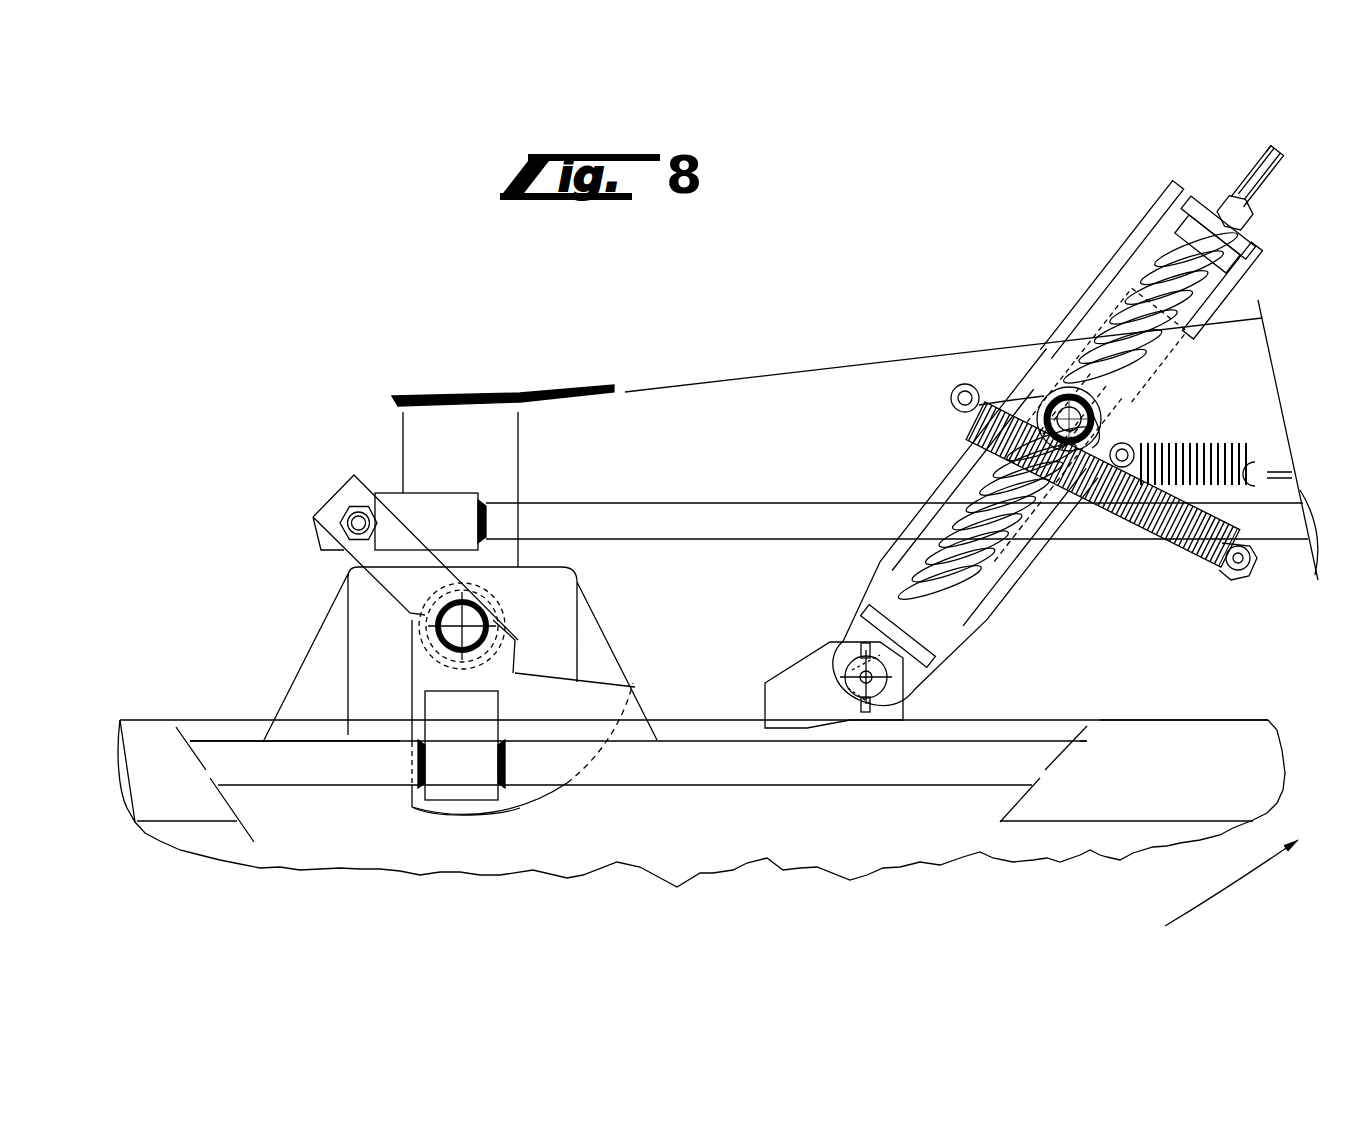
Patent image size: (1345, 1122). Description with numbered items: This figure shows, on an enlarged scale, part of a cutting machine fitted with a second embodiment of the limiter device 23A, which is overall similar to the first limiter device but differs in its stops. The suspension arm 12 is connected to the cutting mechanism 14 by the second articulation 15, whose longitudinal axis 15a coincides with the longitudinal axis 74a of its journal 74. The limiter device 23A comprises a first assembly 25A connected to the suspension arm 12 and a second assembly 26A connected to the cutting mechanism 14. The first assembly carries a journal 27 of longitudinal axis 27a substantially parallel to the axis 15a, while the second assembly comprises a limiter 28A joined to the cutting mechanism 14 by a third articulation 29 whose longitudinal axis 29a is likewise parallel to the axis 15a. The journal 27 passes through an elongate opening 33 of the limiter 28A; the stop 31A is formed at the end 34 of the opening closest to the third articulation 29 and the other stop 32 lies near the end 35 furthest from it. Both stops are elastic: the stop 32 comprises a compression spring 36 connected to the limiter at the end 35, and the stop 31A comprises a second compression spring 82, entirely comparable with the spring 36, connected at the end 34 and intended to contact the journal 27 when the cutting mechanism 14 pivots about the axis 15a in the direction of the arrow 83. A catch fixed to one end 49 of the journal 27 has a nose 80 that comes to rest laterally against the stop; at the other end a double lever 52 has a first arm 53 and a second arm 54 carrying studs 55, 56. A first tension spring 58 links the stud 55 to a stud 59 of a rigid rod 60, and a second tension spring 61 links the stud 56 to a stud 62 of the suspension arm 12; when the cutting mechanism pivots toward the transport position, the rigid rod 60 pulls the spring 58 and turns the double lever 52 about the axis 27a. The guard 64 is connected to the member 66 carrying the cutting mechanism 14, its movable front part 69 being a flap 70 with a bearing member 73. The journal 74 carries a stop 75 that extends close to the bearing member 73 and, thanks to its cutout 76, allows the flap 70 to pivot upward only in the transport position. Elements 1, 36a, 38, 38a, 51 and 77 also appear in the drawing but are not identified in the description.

The frame member 1 is at (757, 378).
The suspension arm 12 is at (627, 392).
The cutting mechanism 14 is at (1262, 740).
The second articulation 15 is at (410, 612).
The longitudinal axis of the second articulation 15a is at (423, 630).
The limiter device 23A is at (1278, 264).
The first assembly 25A is at (1047, 390).
The second assembly 26A is at (979, 644).
The journal 27 is at (1080, 388).
The longitudinal axis of the journal 27a is at (1182, 343).
The limiter 28A is at (870, 572).
The third articulation 29 is at (855, 660).
The longitudinal axis of the third articulation 29a is at (880, 690).
The stop 31A is at (1004, 478).
The stop 32 is at (1258, 347).
The elongate opening 33 is at (1030, 495).
The end of the elongate opening 34 is at (1046, 521).
The end of the elongate opening 35 is at (1147, 262).
The compression spring 36 is at (1130, 285).
The threaded rod 36a is at (1277, 150).
The adjustment nut 38 is at (1254, 196).
The rod end 38a is at (1278, 152).
The end of the journal 49 is at (1052, 390).
The connecting rod 51 is at (698, 502).
The double lever 52 is at (1006, 393).
The first arm 53 is at (1040, 403).
The second arm 54 is at (1133, 447).
The stud 55 is at (951, 396).
The stud 56 is at (1142, 480).
The first tension spring 58 is at (1222, 566).
The stud 59 is at (1243, 575).
The rigid rod 60 is at (647, 523).
The second tension spring 61 is at (1256, 462).
The stud 62 is at (1300, 505).
The guard 64 is at (146, 716).
The carrier member 66 is at (305, 730).
The front part of the guard 69 is at (1168, 718).
The flap 70 is at (1130, 735).
The bearing member 73 is at (480, 783).
The journal 74 is at (478, 612).
The longitudinal axis of the journal 74a is at (425, 629).
The stop 75 is at (402, 540).
The cutout 76 is at (600, 683).
The nut 77 is at (354, 516).
The nose 80 is at (1178, 442).
The second compression spring 82 is at (1030, 585).
The arrow 83 is at (1242, 884).